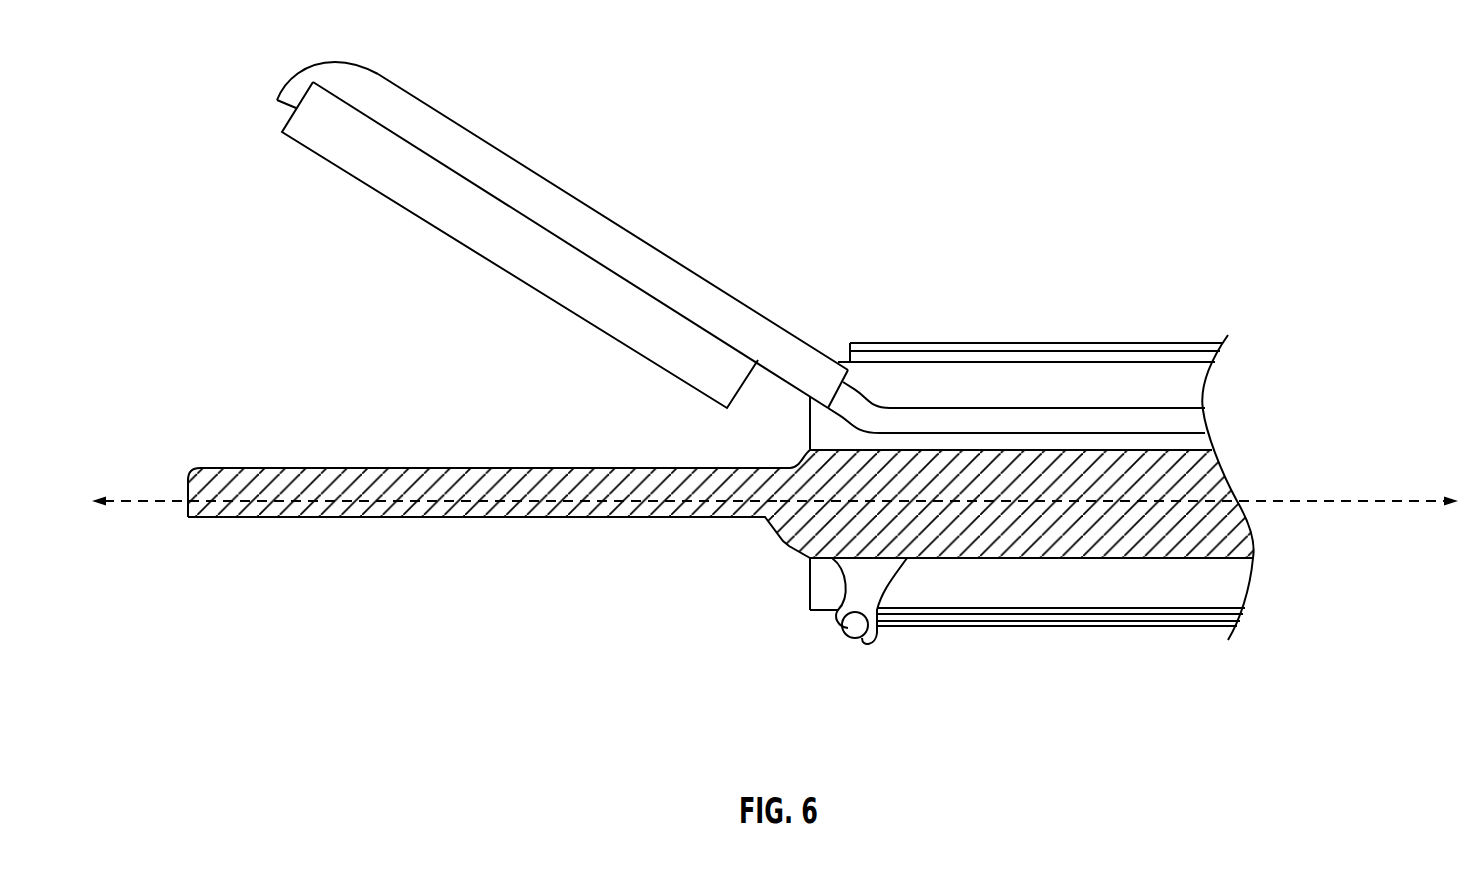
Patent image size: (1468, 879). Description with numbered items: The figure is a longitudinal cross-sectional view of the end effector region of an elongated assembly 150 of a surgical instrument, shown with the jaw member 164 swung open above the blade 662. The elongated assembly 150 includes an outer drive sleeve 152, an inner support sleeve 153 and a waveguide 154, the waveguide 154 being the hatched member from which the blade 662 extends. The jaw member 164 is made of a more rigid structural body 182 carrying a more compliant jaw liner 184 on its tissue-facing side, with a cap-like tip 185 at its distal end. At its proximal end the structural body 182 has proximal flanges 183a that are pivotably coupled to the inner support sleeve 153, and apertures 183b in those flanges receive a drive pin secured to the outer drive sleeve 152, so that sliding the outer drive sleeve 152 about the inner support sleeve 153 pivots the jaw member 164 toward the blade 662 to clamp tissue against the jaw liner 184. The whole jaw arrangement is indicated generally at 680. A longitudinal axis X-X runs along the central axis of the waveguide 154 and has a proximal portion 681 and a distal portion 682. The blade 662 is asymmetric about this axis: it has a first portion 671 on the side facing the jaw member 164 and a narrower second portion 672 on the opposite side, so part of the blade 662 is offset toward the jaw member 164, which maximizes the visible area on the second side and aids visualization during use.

The elongated assembly 150 is at (996, 494).
The outer drive sleeve 152 is at (1022, 343).
The inner support sleeve 153 is at (1040, 626).
The waveguide 154 is at (1158, 525).
The jaw member 164 is at (696, 230).
The structural body 182 is at (742, 323).
The proximal flanges 183a is at (863, 570).
The apertures 183b is at (875, 633).
The jaw liner 184 is at (404, 188).
The end cap 185 is at (298, 100).
The blade 662 is at (468, 498).
The first portion 671 is at (498, 482).
The second portion 672 is at (507, 518).
The arm assembly 680 is at (696, 230).
The proximal portion 681 is at (1305, 503).
The distal portion 682 is at (148, 502).